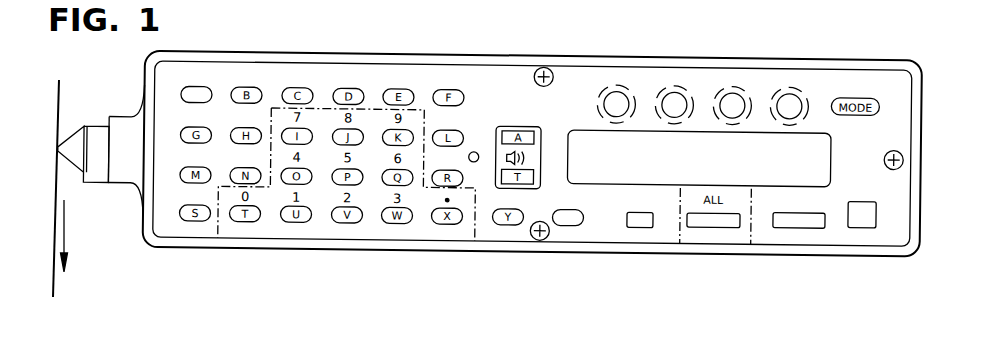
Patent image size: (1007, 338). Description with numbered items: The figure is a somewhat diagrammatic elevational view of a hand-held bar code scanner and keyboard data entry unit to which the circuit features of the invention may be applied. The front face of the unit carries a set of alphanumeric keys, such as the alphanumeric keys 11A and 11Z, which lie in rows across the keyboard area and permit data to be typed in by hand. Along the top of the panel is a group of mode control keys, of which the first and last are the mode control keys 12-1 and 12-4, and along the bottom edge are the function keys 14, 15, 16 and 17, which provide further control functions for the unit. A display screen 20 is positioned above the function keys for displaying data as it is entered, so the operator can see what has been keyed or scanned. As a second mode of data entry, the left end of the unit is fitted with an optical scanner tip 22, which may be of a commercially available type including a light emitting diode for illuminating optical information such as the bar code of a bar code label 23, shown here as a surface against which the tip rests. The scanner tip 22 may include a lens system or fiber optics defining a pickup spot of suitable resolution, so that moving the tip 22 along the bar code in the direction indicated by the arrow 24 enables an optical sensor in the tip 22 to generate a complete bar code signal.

The alphanumeric key 11A is at (202, 85).
The alphanumeric key 11Z is at (574, 227).
The mode control key 12-1 is at (618, 92).
The mode control key 12-4 is at (790, 92).
The function key 14 is at (647, 228).
The function key 15 is at (716, 227).
The function key 16 is at (806, 229).
The function key 17 is at (867, 229).
The display screen 20 is at (808, 130).
The optical scanner tip 22 is at (77, 147).
The bar code label 23 is at (55, 283).
The arrow 24 is at (64, 242).